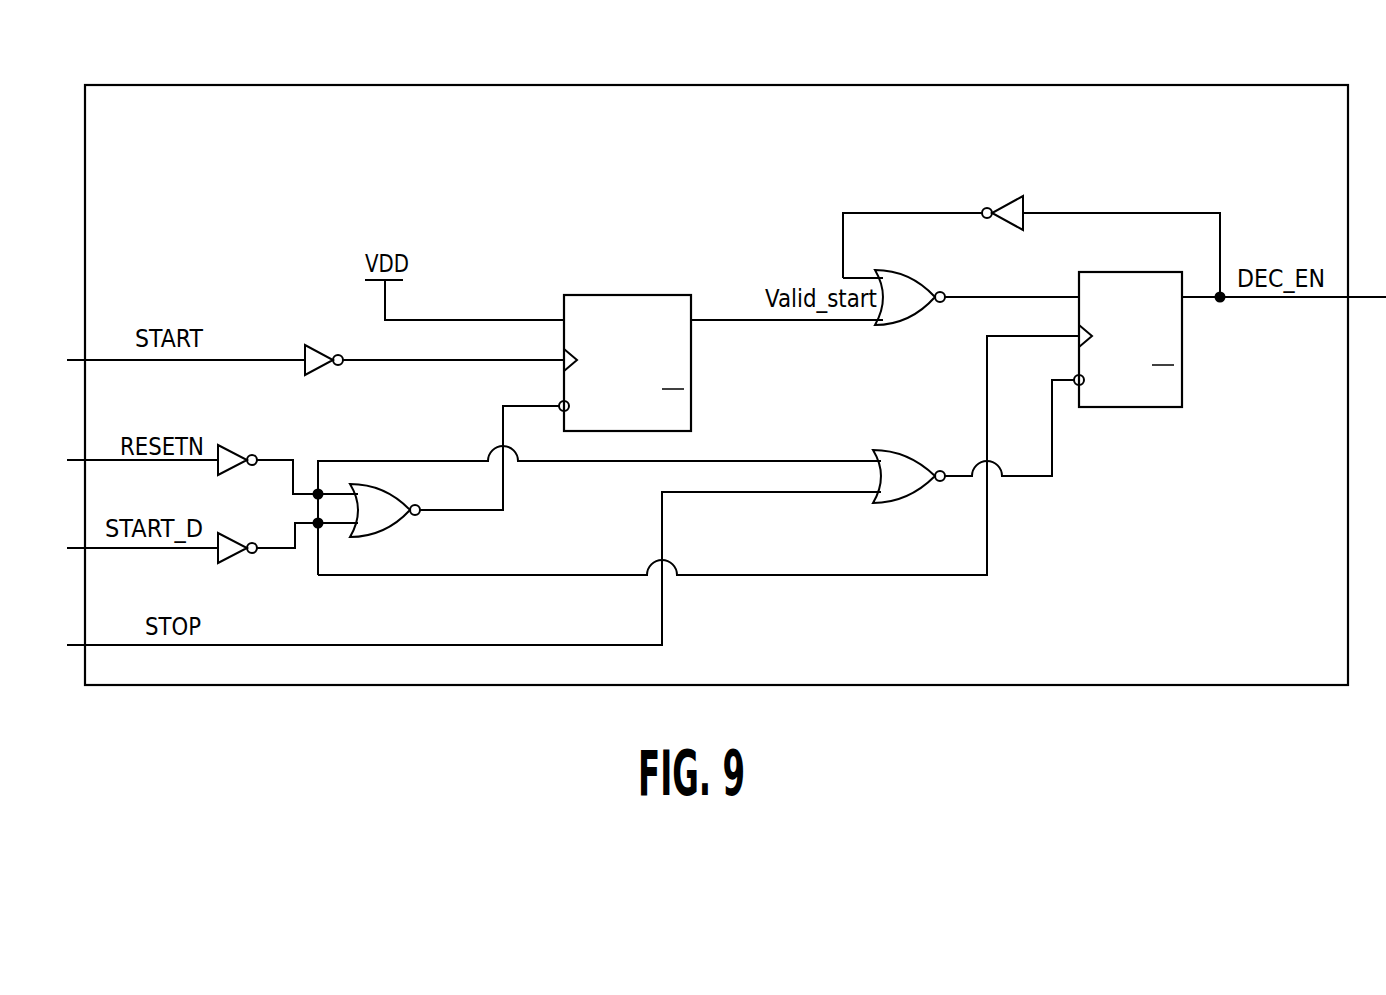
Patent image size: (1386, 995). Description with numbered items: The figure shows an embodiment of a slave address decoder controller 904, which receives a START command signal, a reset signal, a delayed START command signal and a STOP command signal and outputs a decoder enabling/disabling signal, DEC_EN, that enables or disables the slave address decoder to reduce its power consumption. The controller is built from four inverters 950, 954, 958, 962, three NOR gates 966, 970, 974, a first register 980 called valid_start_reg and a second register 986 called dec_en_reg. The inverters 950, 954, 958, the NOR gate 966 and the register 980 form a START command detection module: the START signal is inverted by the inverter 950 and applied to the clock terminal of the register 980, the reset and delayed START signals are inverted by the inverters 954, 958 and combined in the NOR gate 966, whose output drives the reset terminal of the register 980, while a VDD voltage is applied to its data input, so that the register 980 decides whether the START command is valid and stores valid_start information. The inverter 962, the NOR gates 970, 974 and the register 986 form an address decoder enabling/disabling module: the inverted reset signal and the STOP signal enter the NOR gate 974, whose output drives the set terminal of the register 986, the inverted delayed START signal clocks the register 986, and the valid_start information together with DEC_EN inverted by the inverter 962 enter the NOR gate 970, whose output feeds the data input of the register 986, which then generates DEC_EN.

The slave address decoder controller 904 is at (1130, 85).
The inverter 950 is at (312, 345).
The inverter 954 is at (232, 445).
The inverter 958 is at (237, 563).
The inverter 962 is at (1023, 207).
The NOR gate 966 is at (398, 532).
The NOR gate 970 is at (922, 271).
The NOR gate 974 is at (916, 450).
The first register 980 is at (691, 373).
The second register 986 is at (1182, 378).